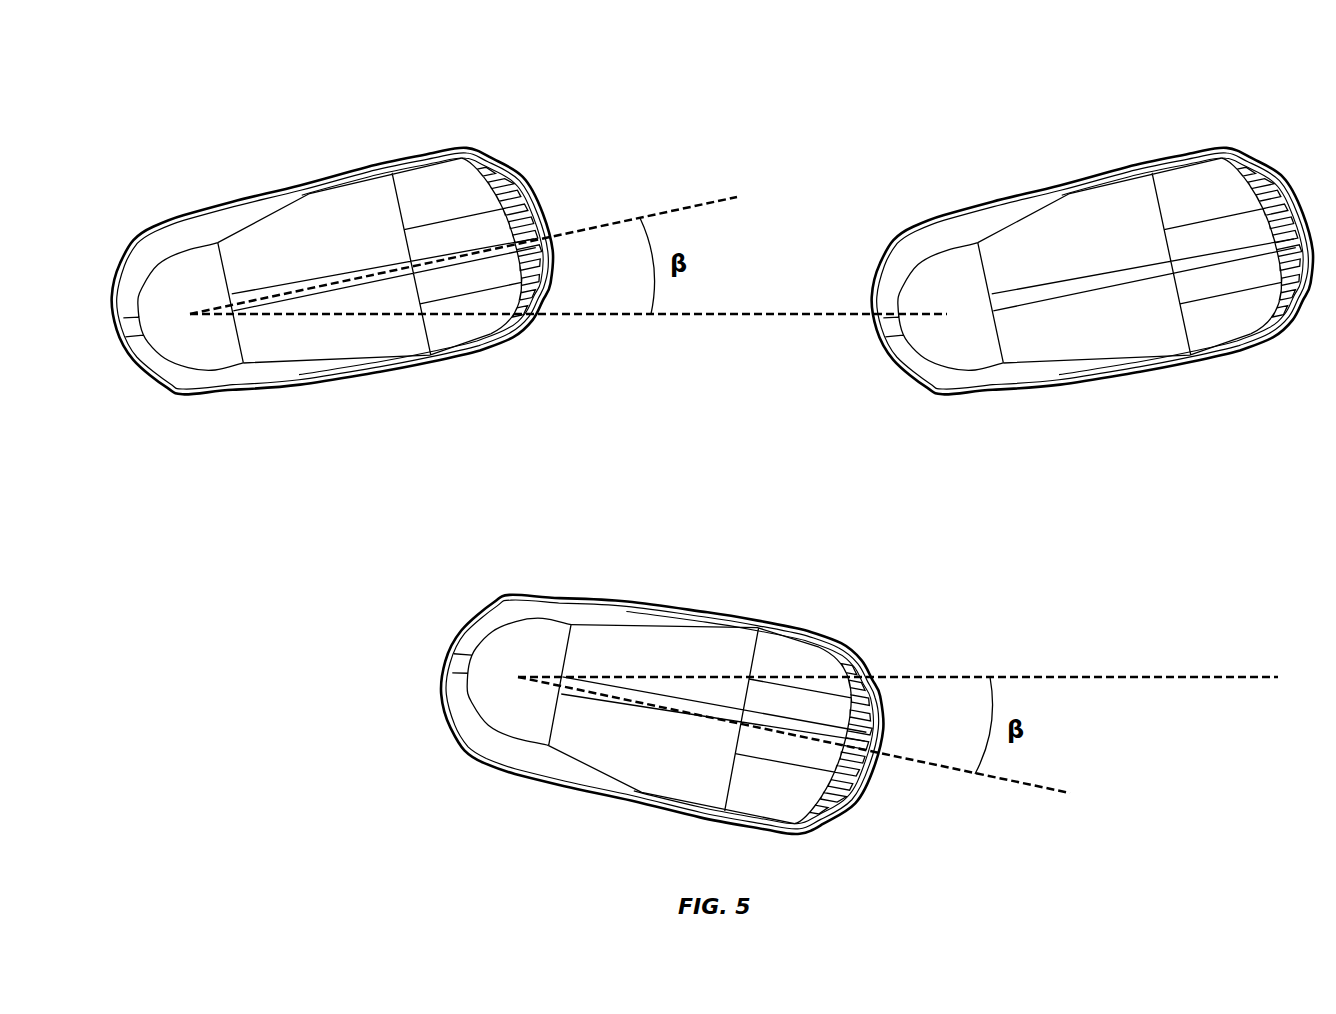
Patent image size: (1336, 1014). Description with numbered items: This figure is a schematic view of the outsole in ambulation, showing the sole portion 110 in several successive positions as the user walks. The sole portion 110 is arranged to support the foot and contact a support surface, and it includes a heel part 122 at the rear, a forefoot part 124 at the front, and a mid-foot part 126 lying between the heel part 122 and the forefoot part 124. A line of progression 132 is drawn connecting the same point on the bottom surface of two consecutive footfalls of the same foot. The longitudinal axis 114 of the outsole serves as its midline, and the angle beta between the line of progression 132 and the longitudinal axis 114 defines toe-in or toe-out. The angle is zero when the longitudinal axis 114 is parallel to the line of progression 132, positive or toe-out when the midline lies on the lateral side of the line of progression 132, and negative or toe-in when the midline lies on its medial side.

The sole portion 110 is at (651, 94).
The longitudinal axis 114 is at (700, 202).
The heel part 122 is at (178, 276).
The forefoot part 124 is at (430, 195).
The mid-foot part 126 is at (340, 213).
The line of progression 132 is at (724, 318).